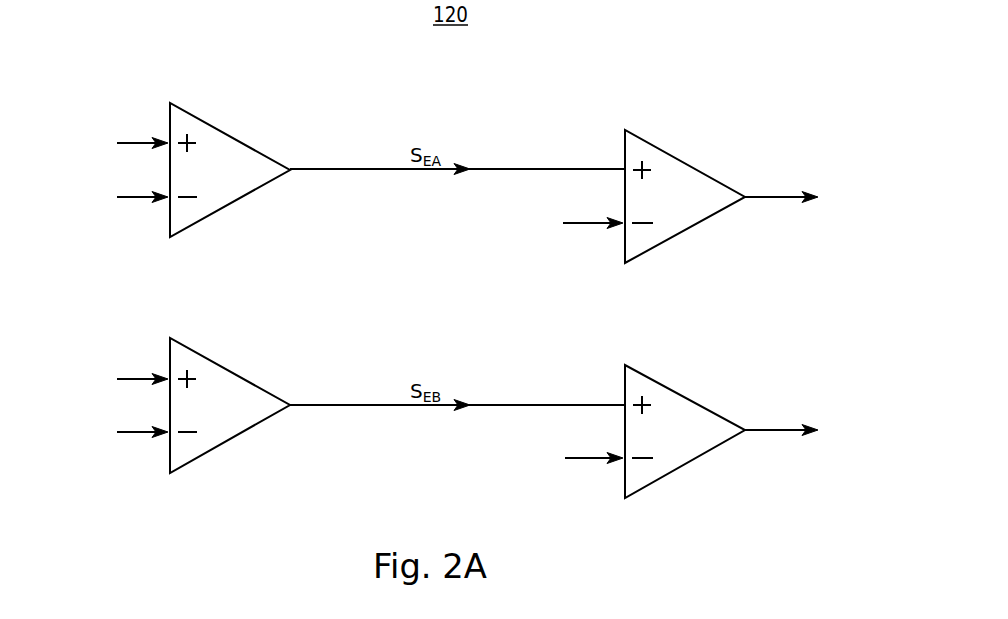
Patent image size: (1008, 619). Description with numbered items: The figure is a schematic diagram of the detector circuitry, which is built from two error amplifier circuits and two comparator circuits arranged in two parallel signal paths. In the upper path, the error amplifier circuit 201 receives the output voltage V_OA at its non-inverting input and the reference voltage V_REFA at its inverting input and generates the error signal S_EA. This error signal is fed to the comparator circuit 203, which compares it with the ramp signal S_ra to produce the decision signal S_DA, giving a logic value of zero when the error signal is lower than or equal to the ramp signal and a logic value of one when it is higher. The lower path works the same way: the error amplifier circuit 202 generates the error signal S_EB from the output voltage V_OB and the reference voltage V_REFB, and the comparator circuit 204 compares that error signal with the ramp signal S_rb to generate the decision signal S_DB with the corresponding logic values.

The error amplifier circuit 201 is at (208, 124).
The error amplifier circuit 202 is at (207, 358).
The comparator circuit 203 is at (661, 150).
The comparator circuit 204 is at (662, 385).